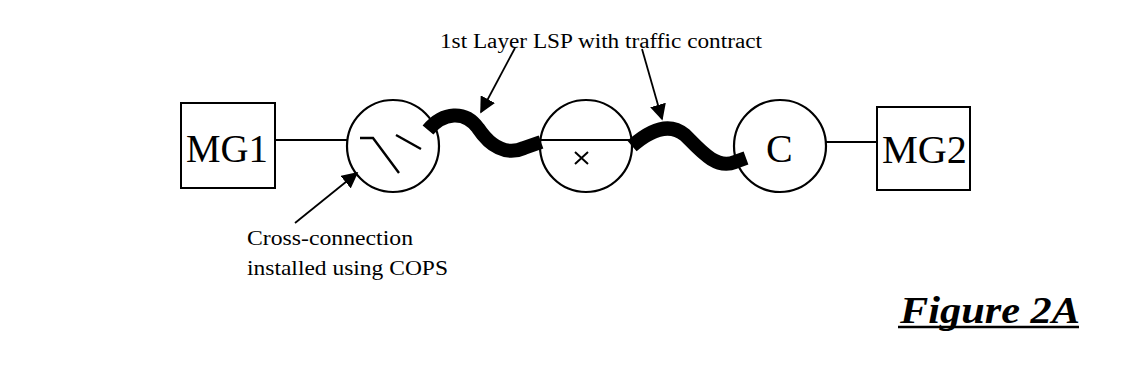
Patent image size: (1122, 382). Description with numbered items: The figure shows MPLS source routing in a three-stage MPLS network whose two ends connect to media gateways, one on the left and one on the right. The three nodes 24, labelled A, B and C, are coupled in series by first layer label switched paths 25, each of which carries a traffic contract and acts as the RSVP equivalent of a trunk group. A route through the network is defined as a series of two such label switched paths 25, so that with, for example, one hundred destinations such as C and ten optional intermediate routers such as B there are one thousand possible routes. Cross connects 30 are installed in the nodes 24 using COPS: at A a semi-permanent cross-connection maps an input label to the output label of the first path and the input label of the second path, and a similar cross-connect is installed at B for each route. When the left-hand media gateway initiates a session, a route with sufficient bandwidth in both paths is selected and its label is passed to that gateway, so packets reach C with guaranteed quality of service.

The node 24 is at (383, 104).
The first layer label switched path 25 is at (502, 162).
The cross connect 30 is at (582, 160).